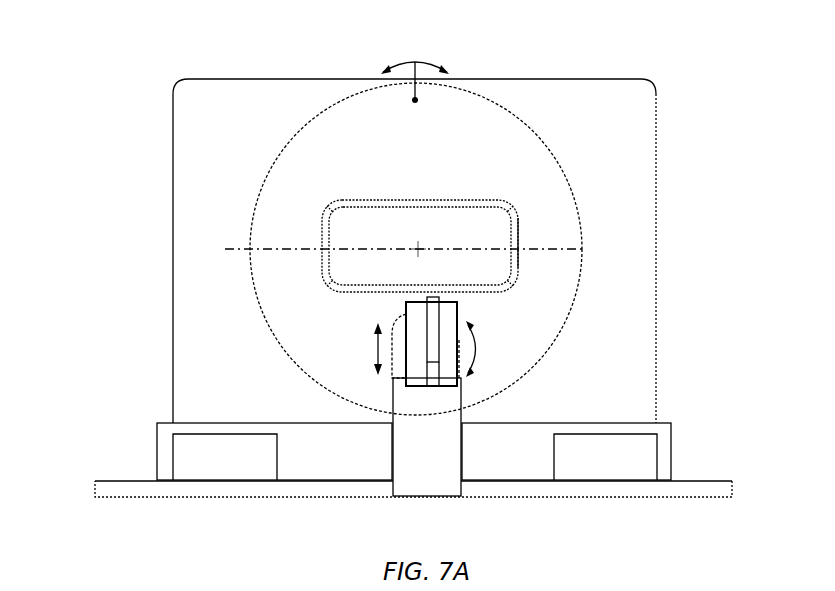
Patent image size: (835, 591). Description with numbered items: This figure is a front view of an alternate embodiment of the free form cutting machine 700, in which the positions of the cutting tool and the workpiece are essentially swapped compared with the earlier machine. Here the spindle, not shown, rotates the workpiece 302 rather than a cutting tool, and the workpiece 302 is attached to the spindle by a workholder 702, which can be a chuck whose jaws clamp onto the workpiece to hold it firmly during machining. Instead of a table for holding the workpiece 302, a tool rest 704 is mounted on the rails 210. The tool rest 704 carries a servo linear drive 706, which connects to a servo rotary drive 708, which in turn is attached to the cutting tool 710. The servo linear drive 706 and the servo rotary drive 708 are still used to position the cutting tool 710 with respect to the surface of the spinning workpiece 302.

The free form cutting machine 700 is at (688, 84).
The workpiece 302 is at (368, 232).
The workholder 702 is at (544, 184).
The tool rest 704 is at (522, 433).
The cutting tool 710 is at (428, 321).
The servo rotary drive 708 is at (415, 350).
The servo linear drive 706 is at (413, 448).
The rails 210 is at (255, 470).